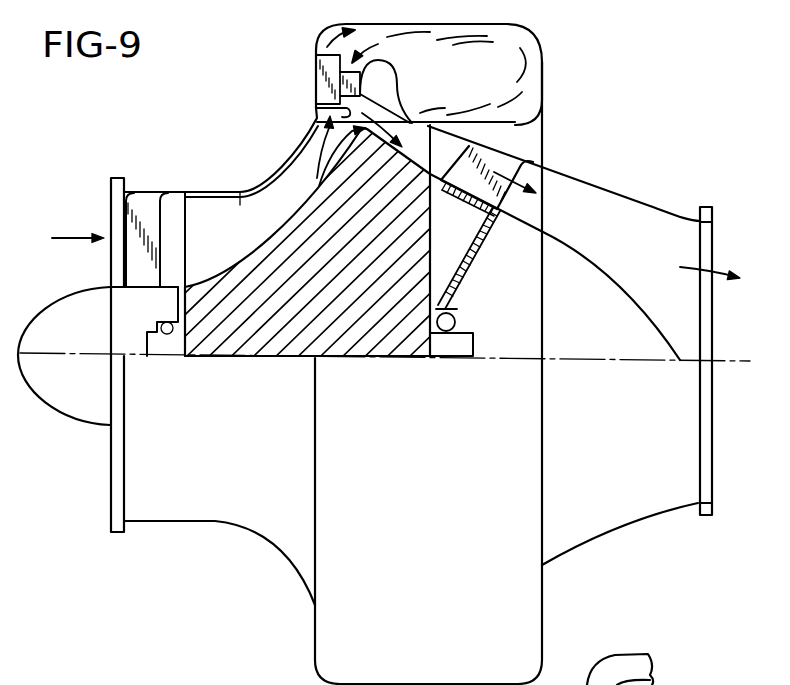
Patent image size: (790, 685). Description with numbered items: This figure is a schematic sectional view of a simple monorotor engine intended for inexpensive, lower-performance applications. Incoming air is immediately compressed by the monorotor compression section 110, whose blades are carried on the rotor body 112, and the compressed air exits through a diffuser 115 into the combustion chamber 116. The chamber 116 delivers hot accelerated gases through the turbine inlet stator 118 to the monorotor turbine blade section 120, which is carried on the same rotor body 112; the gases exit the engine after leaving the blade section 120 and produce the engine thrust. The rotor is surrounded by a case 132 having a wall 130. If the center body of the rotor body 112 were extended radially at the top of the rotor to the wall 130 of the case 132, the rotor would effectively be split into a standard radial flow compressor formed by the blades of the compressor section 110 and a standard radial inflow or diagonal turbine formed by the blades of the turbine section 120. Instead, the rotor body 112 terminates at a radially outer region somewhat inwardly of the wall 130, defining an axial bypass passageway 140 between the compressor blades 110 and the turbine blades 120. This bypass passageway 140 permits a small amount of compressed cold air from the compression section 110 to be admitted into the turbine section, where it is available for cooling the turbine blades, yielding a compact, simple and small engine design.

The monorotor compression section 110 is at (240, 192).
The rotor body 112 is at (357, 338).
The diffuser 115 is at (317, 60).
The combustion chamber 116 is at (430, 67).
The turbine inlet stator 118 is at (330, 86).
The monorotor turbine blade section 120 is at (416, 143).
The wall 130 is at (340, 106).
The case 132 is at (276, 167).
The axial bypass passageway 140 is at (344, 137).